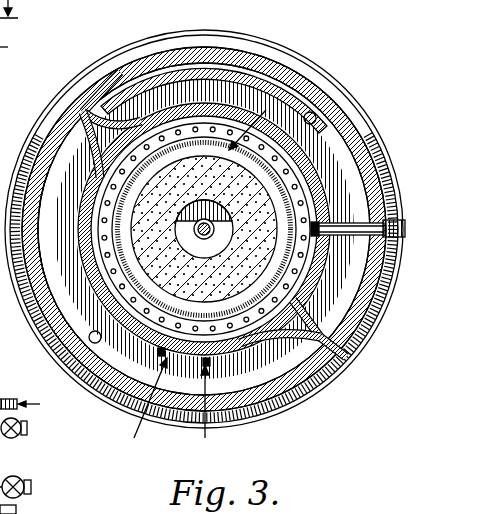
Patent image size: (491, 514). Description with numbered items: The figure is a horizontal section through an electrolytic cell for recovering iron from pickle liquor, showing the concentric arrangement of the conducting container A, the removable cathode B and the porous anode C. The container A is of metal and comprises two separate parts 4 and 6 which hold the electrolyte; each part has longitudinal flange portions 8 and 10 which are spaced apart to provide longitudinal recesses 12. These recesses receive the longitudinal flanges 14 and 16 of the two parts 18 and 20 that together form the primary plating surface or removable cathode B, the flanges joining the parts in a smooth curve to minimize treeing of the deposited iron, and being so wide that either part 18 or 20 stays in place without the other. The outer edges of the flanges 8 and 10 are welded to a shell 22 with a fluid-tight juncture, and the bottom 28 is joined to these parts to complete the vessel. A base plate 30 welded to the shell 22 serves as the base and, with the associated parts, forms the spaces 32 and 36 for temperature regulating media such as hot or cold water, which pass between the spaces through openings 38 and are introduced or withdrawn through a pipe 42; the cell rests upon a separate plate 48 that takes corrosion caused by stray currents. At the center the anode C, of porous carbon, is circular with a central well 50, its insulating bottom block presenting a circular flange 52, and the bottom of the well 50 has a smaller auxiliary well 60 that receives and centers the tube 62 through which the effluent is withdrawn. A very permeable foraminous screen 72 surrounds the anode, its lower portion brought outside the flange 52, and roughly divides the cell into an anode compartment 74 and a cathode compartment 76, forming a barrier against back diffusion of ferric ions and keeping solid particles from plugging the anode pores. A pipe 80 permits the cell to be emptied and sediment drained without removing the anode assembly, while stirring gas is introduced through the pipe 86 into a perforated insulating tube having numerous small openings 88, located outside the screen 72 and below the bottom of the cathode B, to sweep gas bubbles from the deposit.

The container part 4 is at (212, 108).
The container part 6 is at (152, 357).
The longitudinal flange portion 8 is at (322, 327).
The longitudinal flange portion 10 is at (105, 115).
The longitudinal recess 12 is at (82, 101).
The longitudinal flange 14 is at (352, 335).
The longitudinal flange 16 is at (92, 98).
The cathode part 18 is at (203, 103).
The cathode part 20 is at (204, 276).
The shell 22 is at (275, 67).
The bottom 28 is at (333, 137).
The base plate 30 is at (296, 72).
The space 32 is at (250, 62).
The space 36 is at (58, 280).
The opening 38 is at (316, 113).
The pipe 42 is at (27, 495).
The separate plate 48 is at (327, 76).
The central well 50 is at (221, 247).
The circular flange 52 is at (158, 352).
The auxiliary well 60 is at (200, 233).
The tube 62 is at (207, 222).
The foraminous screen 72 is at (70, 100).
The anode compartment 74 is at (100, 210).
The cathode compartment 76 is at (90, 162).
The pipe 80 is at (22, 436).
The pipe 86 is at (358, 226).
The small openings 88 is at (128, 178).
The conducting container A is at (104, 247).
The removable cathode B is at (144, 407).
The porous anode C is at (256, 121).